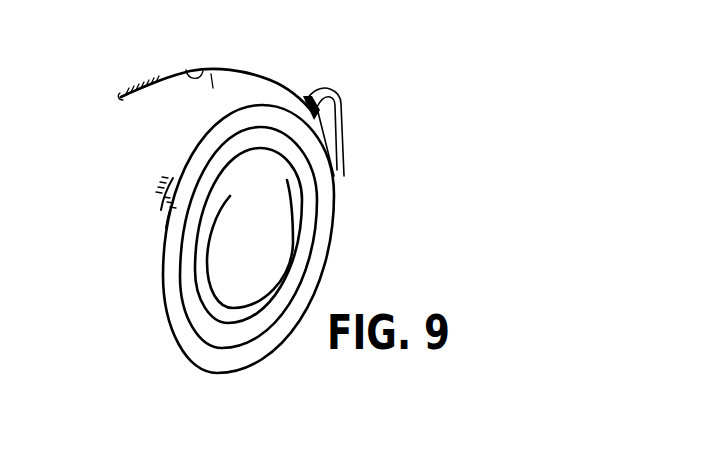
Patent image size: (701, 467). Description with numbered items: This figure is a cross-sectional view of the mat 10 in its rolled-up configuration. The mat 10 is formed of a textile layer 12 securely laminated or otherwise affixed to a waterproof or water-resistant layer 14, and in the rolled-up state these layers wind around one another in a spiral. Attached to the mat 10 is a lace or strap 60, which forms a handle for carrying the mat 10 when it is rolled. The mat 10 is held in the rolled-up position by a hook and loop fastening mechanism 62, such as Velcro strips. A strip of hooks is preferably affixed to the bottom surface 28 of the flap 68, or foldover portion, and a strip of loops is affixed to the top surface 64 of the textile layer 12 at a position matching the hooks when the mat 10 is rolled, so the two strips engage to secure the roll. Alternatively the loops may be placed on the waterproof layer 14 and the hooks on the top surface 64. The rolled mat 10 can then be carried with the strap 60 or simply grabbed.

The mat 10 is at (424, 178).
The textile layer 12 is at (233, 68).
The waterproof or water-resistant layer 14 is at (201, 70).
The bottom surface 28 is at (215, 95).
The strap 60 is at (343, 101).
The hook and loop fastening mechanism 62 is at (127, 100).
The top surface 64 is at (168, 218).
The flap 68 is at (118, 94).